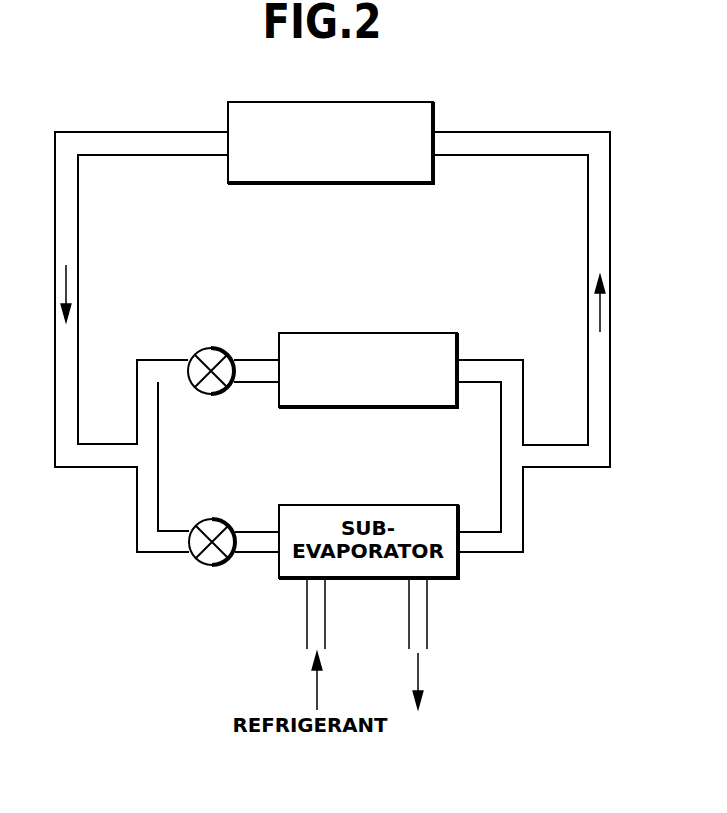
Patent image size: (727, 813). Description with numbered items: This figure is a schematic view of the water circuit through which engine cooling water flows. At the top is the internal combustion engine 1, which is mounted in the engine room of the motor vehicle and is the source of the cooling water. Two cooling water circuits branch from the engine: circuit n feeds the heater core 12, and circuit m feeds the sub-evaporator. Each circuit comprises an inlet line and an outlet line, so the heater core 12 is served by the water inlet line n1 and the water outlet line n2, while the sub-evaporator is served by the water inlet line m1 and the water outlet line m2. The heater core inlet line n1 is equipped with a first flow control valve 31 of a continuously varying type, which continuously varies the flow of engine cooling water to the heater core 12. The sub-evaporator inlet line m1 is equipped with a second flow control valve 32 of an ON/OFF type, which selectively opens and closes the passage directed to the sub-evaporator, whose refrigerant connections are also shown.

The internal combustion engine 1 is at (392, 102).
The heater core 12 is at (390, 333).
The first flow control valve 31 is at (220, 397).
The second flow control valve 32 is at (214, 566).
The water inlet line n1 is at (158, 360).
The water outlet line n2 is at (478, 358).
The water inlet line m1 is at (172, 553).
The water outlet line m2 is at (478, 553).